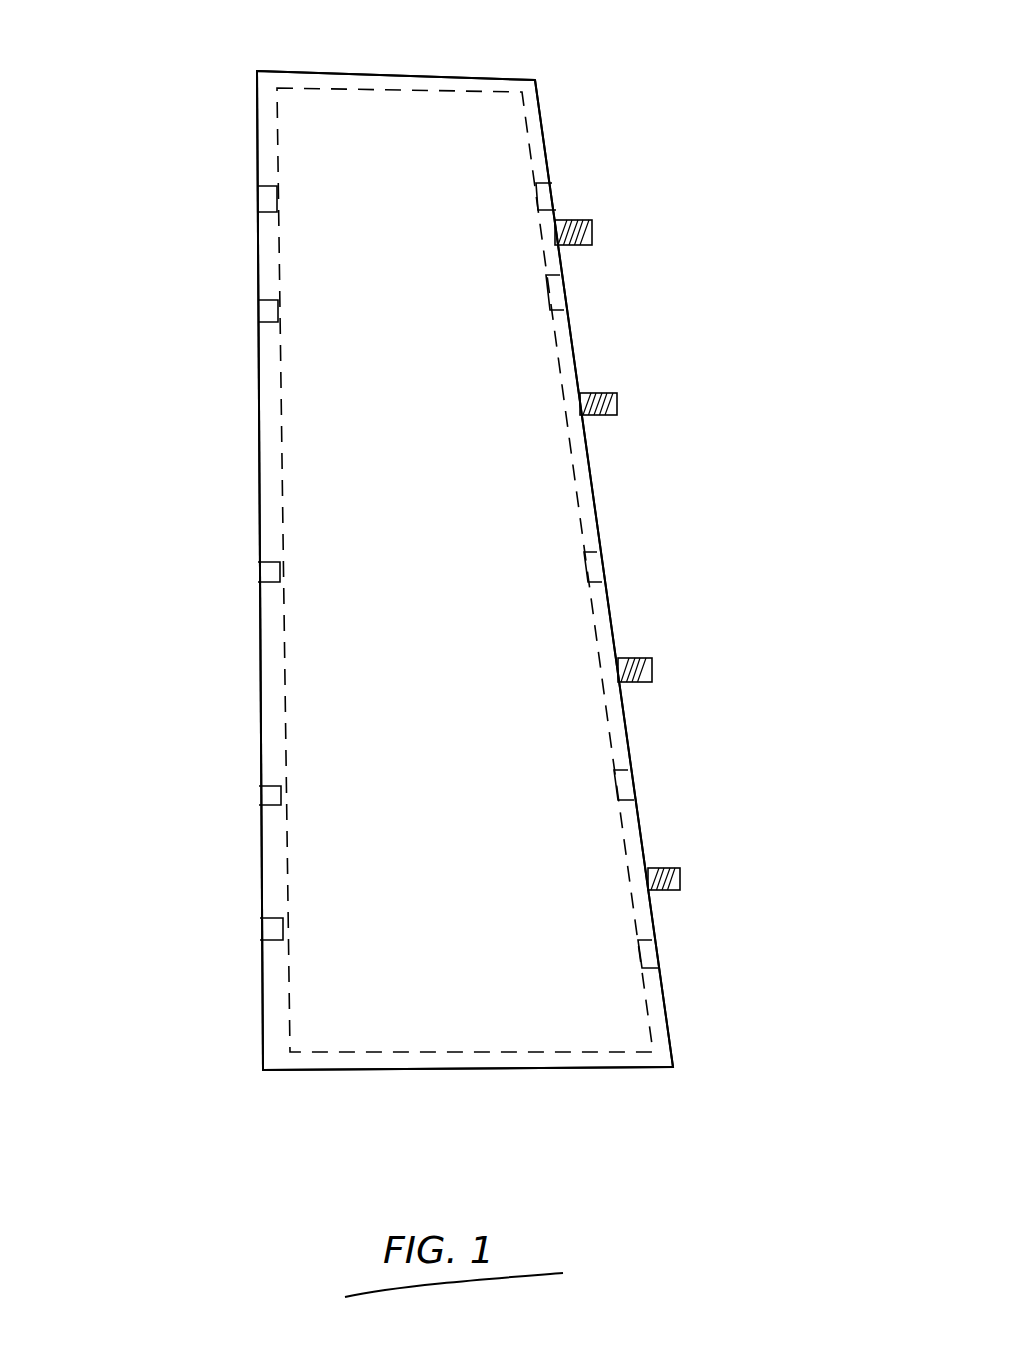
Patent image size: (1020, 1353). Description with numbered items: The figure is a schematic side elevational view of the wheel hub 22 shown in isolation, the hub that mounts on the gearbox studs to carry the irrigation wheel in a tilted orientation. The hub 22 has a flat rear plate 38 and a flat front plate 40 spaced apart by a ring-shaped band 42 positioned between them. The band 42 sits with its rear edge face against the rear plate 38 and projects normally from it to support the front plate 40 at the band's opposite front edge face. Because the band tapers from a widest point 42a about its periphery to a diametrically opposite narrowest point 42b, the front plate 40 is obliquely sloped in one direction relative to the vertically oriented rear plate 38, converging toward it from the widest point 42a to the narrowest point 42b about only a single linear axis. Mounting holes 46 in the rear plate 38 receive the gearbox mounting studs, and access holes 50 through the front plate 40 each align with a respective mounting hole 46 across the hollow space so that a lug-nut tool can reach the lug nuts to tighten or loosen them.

The wheel hub 22 is at (104, 294).
The rear plate 38 is at (258, 497).
The front plate 40 is at (610, 617).
The ring-shaped band 42 is at (543, 482).
The widest point 42a is at (393, 1070).
The narrowest point 42b is at (445, 78).
The mounting holes 46 is at (258, 190).
The access holes 50 is at (554, 195).